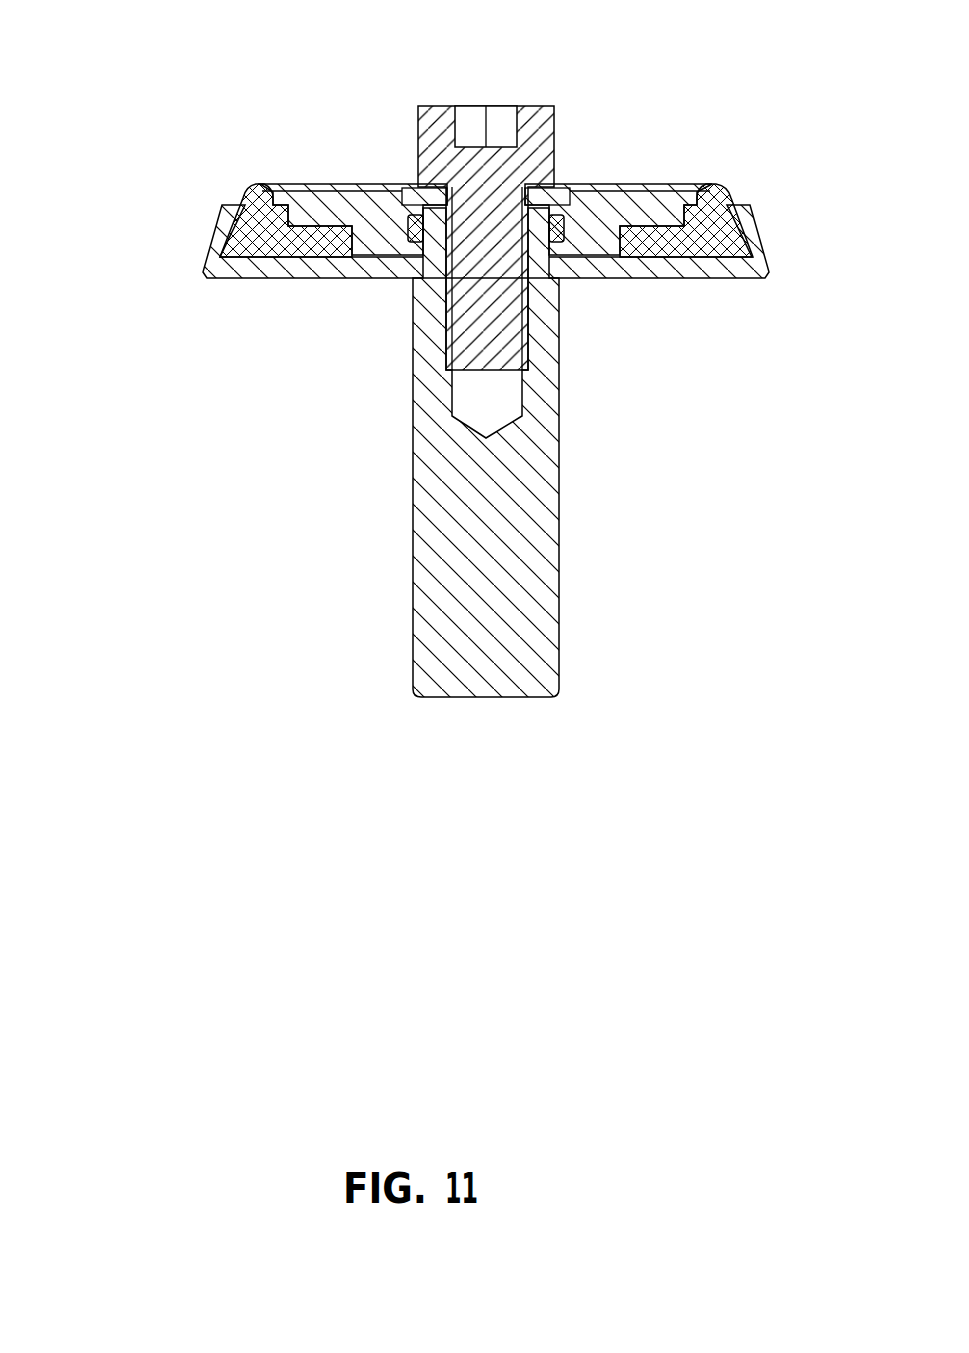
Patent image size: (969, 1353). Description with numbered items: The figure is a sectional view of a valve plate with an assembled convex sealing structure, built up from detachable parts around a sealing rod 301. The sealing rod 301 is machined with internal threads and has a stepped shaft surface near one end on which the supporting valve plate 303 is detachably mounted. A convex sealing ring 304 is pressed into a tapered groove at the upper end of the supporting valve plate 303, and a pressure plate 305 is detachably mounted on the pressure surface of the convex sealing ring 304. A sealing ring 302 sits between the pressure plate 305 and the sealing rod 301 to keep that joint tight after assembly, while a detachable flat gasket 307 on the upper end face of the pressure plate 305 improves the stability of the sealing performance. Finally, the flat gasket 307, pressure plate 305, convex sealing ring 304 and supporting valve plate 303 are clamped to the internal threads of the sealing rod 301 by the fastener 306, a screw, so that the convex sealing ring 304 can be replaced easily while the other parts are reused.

The sealing rod 301 is at (458, 547).
The sealing ring 302 is at (422, 235).
The supporting valve plate 303 is at (238, 275).
The convex sealing ring 304 is at (255, 210).
The pressure plate 305 is at (365, 212).
The fastener 306 is at (555, 135).
The flat gasket 307 is at (560, 197).